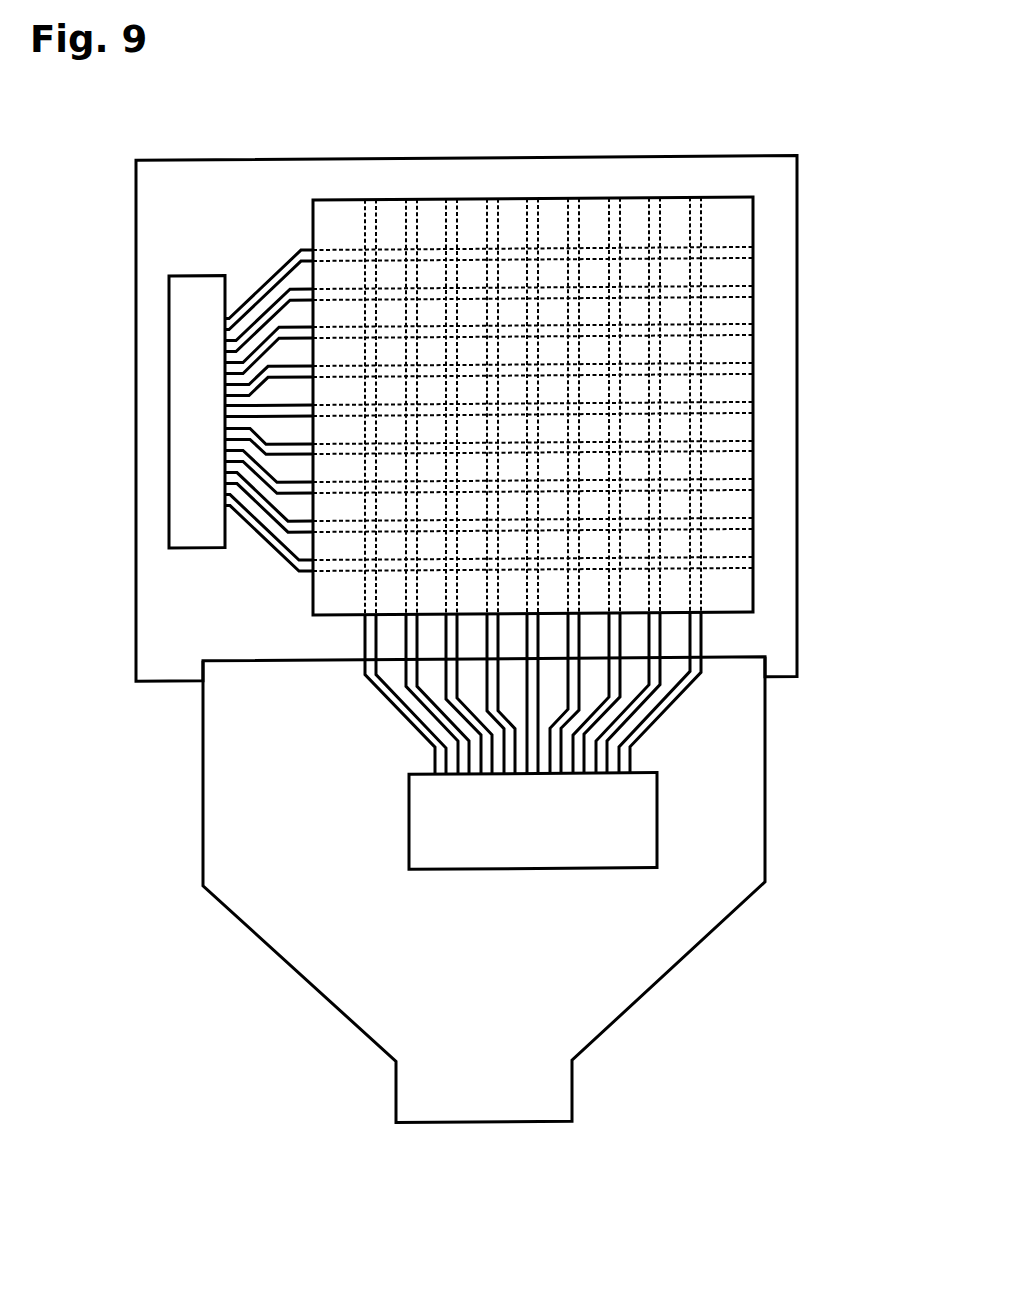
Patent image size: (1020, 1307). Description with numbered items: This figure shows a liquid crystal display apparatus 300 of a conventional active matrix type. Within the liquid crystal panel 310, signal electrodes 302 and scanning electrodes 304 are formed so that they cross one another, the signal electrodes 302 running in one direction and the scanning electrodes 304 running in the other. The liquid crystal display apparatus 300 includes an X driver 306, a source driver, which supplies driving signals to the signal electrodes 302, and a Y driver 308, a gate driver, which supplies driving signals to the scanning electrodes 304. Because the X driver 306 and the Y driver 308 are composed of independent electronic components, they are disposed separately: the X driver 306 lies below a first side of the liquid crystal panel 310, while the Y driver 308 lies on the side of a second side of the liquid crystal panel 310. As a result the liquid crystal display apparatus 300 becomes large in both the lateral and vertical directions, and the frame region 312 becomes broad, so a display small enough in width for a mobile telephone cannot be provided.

The liquid crystal display apparatus 300 is at (797, 212).
The signal electrodes 302 is at (703, 188).
The scanning electrodes 304 is at (758, 243).
The X driver 306 is at (657, 837).
The Y driver 308 is at (190, 413).
The liquid crystal panel 310 is at (753, 590).
The frame region 312 is at (313, 155).